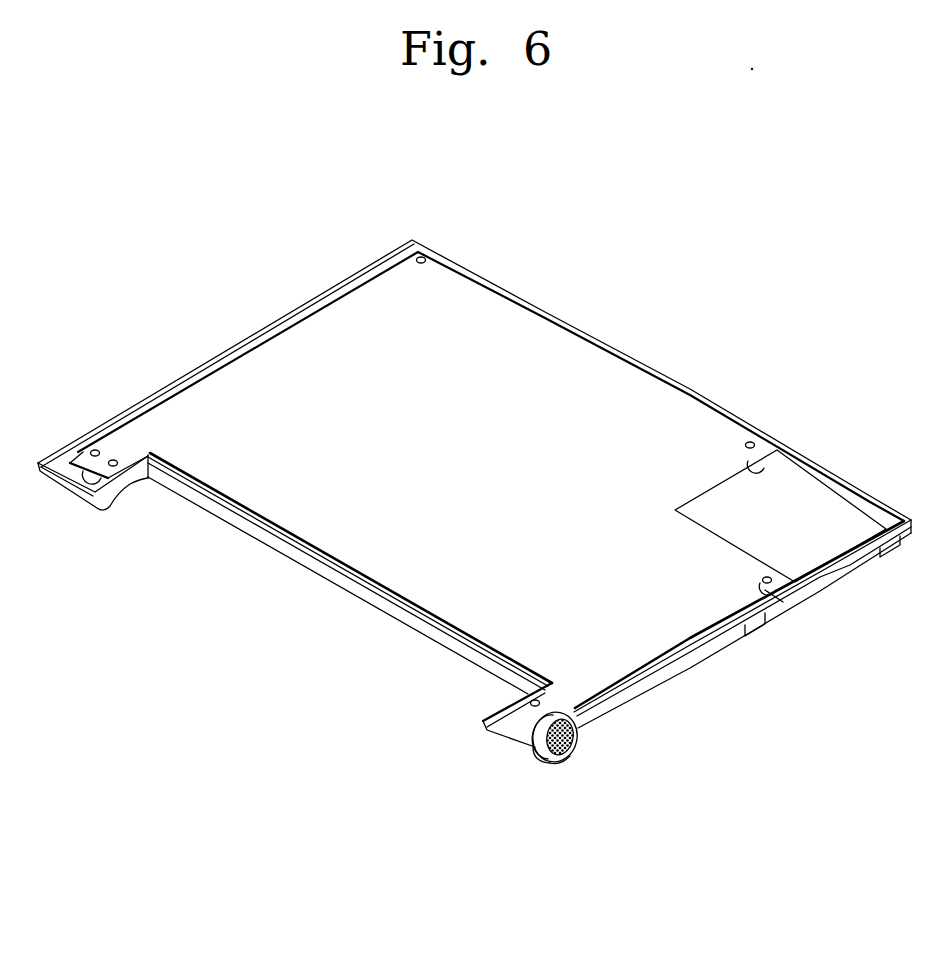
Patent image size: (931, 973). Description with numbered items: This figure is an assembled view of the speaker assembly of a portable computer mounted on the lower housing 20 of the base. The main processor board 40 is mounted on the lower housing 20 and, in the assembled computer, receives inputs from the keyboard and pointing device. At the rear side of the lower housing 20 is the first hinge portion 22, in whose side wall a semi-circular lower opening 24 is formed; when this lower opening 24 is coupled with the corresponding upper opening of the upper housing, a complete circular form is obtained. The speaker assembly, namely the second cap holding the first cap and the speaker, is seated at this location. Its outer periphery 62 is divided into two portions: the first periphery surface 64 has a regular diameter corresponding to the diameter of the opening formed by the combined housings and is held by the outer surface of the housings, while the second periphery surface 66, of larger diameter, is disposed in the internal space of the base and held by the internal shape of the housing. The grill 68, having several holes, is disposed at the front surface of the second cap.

The lower housing 20 is at (338, 256).
The main processor board 40 is at (263, 362).
The first hinge portion 22 is at (515, 743).
The lower opening 24 is at (535, 752).
The outer periphery 62 is at (684, 704).
The second periphery surface 66 is at (558, 711).
The first periphery surface 64 is at (573, 733).
The grill 68 is at (578, 744).